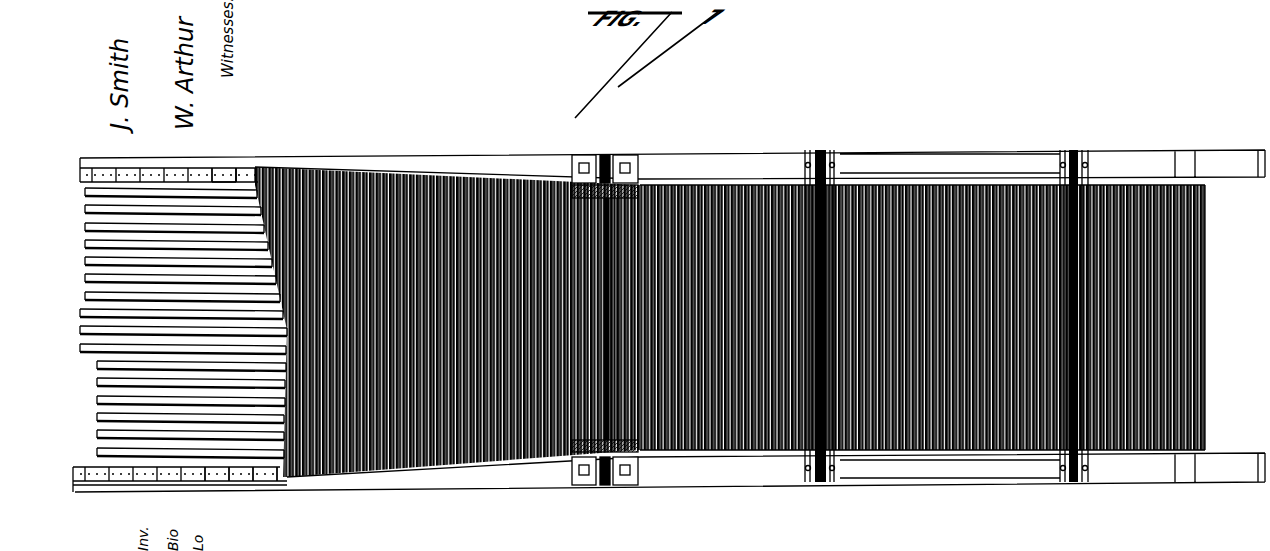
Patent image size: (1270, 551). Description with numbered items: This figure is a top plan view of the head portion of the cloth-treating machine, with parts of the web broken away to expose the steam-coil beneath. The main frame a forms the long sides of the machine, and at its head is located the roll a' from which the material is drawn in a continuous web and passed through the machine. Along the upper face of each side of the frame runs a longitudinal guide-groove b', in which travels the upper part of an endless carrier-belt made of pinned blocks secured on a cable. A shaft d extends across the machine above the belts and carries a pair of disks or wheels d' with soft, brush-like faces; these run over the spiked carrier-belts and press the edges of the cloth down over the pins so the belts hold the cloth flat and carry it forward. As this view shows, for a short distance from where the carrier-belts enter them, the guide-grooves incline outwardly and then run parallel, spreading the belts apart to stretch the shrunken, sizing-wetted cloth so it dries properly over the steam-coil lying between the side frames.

The main frame a is at (669, 322).
The roll a' is at (1212, 317).
The guide-groove b' is at (263, 323).
The shaft d is at (611, 319).
The disks or wheels d' is at (618, 320).